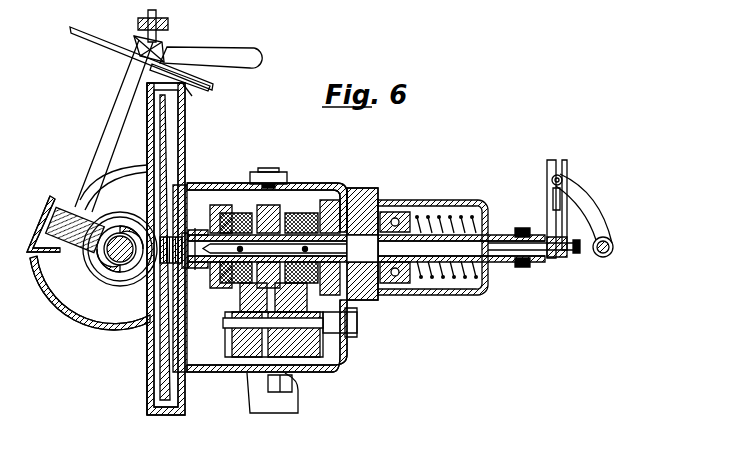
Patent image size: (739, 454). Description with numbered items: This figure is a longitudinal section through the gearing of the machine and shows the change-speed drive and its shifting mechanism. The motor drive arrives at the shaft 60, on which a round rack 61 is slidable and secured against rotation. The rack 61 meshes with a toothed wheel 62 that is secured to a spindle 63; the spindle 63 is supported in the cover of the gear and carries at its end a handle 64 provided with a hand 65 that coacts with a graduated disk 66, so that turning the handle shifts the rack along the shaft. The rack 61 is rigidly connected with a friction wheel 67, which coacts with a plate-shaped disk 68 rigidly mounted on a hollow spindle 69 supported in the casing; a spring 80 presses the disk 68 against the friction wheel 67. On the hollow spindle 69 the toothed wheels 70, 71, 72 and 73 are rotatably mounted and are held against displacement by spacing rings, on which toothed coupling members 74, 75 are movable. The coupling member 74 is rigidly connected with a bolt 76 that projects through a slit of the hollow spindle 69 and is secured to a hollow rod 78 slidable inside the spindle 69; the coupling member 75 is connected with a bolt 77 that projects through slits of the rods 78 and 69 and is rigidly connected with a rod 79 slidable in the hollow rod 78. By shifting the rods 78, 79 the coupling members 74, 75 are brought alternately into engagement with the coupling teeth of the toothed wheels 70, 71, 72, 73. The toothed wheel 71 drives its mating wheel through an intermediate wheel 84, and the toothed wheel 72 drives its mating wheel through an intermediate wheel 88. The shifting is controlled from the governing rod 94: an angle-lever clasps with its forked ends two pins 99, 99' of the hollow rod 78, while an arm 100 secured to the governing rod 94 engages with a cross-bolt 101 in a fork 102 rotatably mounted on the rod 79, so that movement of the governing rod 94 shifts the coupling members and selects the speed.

The shaft 60 is at (117, 260).
The rack 61 is at (124, 236).
The toothed wheel 62 is at (72, 213).
The spindle 63 is at (112, 110).
The handle 64 is at (255, 67).
The hand 65 is at (137, 38).
The graduated disk 66 is at (82, 36).
The friction wheel 67 is at (93, 265).
The plate-shaped disk 68 is at (165, 364).
The hollow spindle 69 is at (200, 290).
The toothed wheel 70 is at (215, 205).
The toothed wheel 71 is at (262, 188).
The toothed wheel 72 is at (285, 208).
The toothed wheel 73 is at (355, 196).
The coupling member 74 is at (234, 212).
The coupling member 75 is at (306, 212).
The bolt 76 is at (238, 283).
The bolt 77 is at (306, 283).
The hollow rod 78 is at (446, 282).
The rod 79 is at (547, 252).
The spring 80 is at (432, 216).
The intermediate wheel 84 is at (250, 338).
The intermediate wheel 88 is at (293, 350).
The governing rod 94 is at (609, 245).
The pin 99 is at (521, 222).
The pin 99' is at (517, 274).
The arm 100 is at (590, 208).
The cross-bolt 101 is at (563, 179).
The fork 102 is at (548, 164).